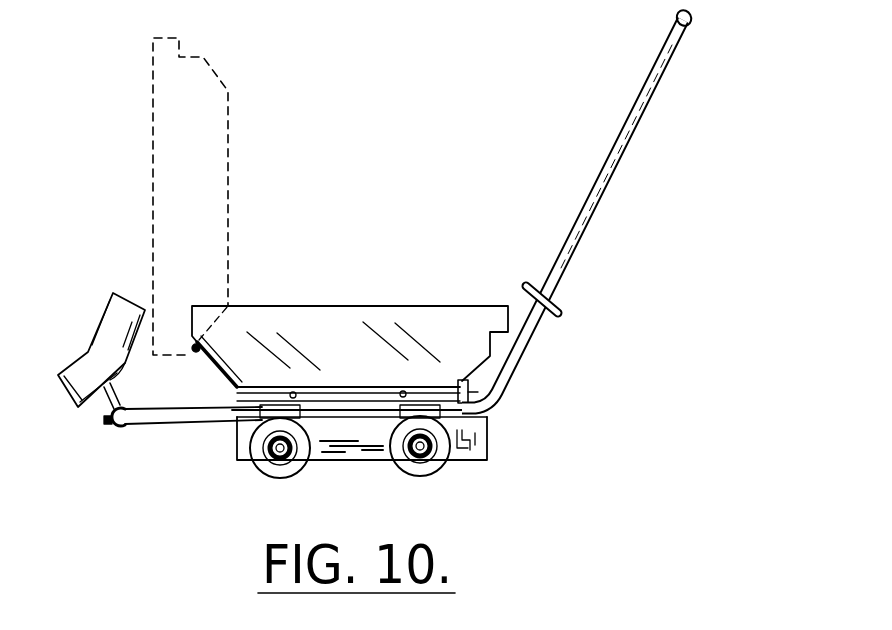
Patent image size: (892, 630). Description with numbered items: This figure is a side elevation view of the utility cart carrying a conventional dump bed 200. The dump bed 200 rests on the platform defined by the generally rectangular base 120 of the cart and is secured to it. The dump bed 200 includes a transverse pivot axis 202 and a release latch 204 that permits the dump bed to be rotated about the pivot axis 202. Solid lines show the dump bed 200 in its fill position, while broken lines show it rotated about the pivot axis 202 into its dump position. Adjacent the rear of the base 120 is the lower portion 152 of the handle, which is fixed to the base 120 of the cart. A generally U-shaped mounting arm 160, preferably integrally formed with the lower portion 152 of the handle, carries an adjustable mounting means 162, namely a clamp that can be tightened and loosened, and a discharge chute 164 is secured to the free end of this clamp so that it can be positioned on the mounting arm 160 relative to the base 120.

The base 120 is at (347, 450).
The lower portion 152 is at (617, 148).
The mounting arm 160 is at (190, 416).
The adjustable mounting means 162 is at (106, 423).
The discharge chute 164 is at (110, 331).
The dump bed 200 is at (353, 349).
The transverse pivot axis 202 is at (192, 353).
The release latch 204 is at (470, 391).